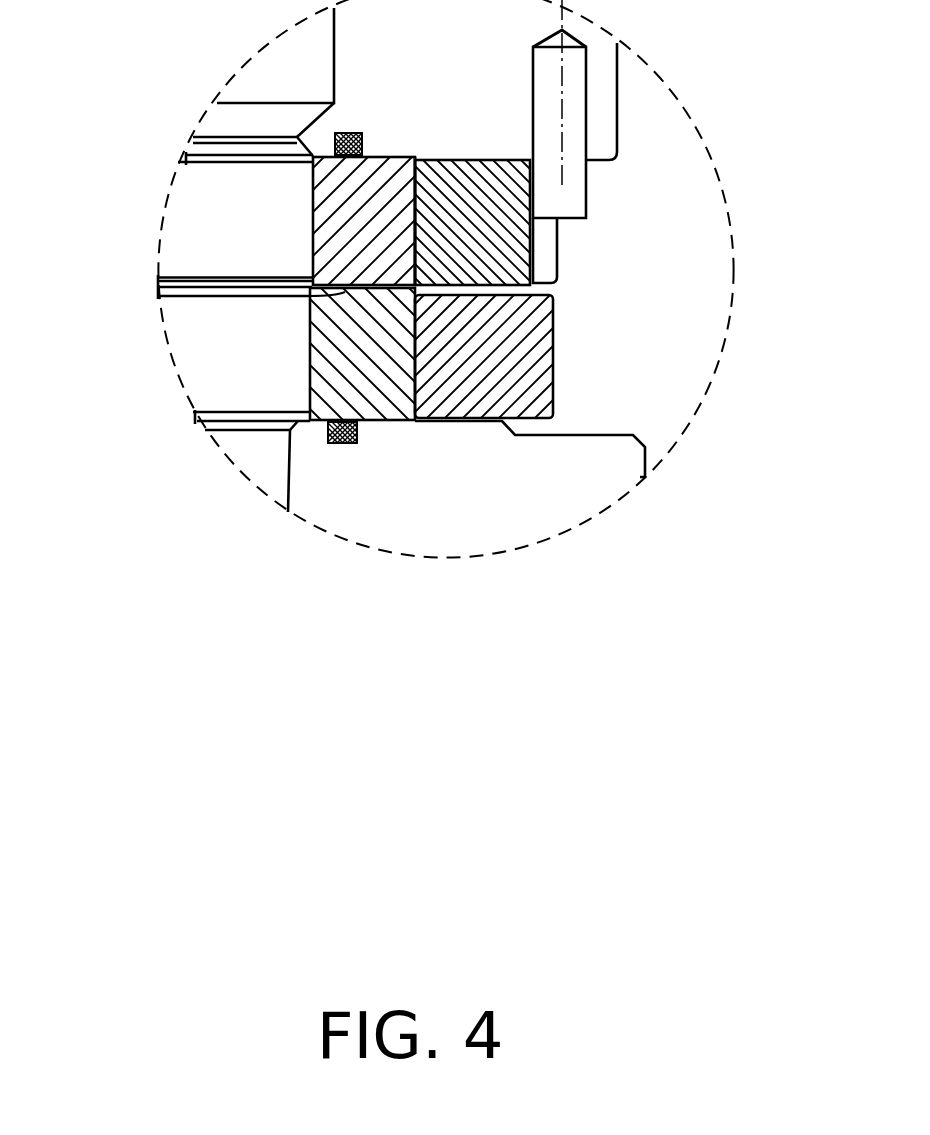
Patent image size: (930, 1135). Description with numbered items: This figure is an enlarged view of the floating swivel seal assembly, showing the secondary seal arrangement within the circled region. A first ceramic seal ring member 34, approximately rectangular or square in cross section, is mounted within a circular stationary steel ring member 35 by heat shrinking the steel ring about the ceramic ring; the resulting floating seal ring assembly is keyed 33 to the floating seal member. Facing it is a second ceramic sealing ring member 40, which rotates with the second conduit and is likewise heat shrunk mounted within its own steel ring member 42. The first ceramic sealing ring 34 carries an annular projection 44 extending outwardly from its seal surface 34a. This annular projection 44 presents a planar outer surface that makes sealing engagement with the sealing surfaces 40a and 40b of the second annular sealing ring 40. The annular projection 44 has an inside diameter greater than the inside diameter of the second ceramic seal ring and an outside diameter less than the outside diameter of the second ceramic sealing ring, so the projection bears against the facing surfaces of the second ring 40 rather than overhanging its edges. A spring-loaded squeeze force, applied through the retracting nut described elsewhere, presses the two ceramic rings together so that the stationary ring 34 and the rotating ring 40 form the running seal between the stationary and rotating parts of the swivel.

The key 33 is at (577, 118).
The first ceramic seal ring member 34 is at (312, 209).
The seal surface 34a is at (340, 288).
The circular stationary steel ring member 35 is at (500, 257).
The second ceramic sealing ring member 40 is at (333, 345).
The sealing surface 40a is at (340, 293).
The sealing surface 40b is at (380, 422).
The steel ring member 42 is at (520, 358).
The annular projection 44 is at (367, 284).